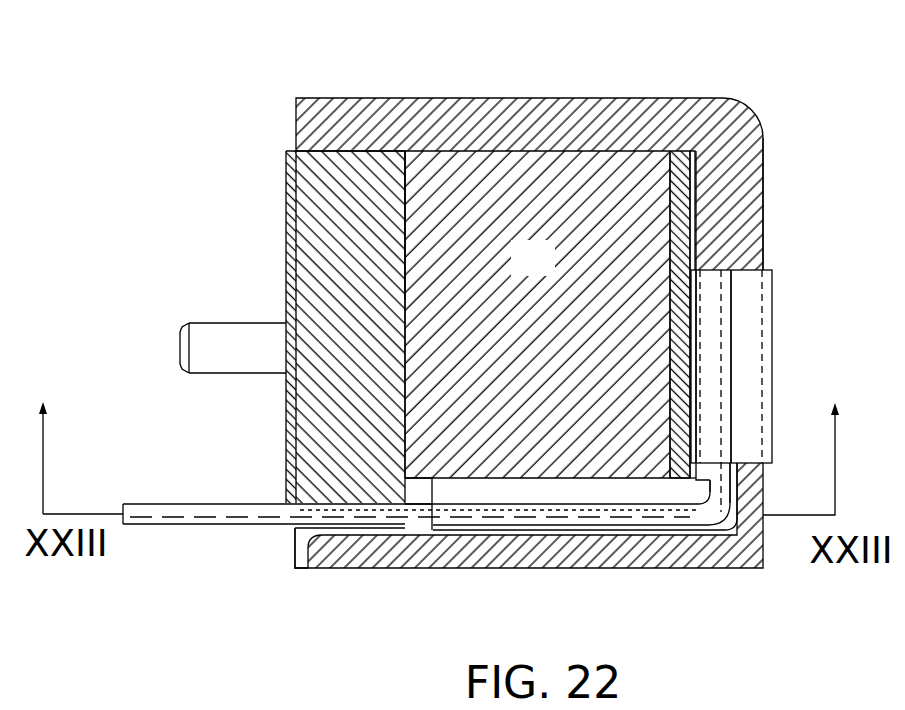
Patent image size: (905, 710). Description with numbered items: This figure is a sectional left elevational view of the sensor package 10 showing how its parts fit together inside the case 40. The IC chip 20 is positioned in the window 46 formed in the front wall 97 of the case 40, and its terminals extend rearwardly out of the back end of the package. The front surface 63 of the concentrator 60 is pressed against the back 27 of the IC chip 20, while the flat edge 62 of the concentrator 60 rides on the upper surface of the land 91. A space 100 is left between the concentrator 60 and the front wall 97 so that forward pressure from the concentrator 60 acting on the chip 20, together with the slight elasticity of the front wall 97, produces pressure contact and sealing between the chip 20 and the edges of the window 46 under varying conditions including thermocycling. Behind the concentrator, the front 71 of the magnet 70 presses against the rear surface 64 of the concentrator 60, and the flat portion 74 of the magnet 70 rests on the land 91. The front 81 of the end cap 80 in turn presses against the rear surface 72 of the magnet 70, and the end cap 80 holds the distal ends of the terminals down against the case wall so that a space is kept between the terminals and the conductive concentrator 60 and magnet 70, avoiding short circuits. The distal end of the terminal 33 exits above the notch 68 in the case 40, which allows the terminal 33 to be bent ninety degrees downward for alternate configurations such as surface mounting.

The sensor package 10 is at (498, 326).
The IC chip 20 is at (750, 301).
The back of the IC chip 27 is at (677, 362).
The terminal 33 is at (138, 515).
The case 40 is at (598, 103).
The window 46 is at (743, 362).
The concentrator 60 is at (710, 150).
The flat edge of the concentrator 62 is at (681, 492).
The front surface of the concentrator 63 is at (705, 190).
The rear surface of the concentrator 64 is at (658, 419).
The notch 68 is at (303, 560).
The magnet 70 is at (517, 272).
The front of the magnet 71 is at (675, 428).
The rear surface of the magnet 72 is at (396, 207).
The flat portion of the magnet 74 is at (487, 493).
The end cap 80 is at (355, 170).
The front of the end cap 81 is at (417, 185).
The land 91 is at (607, 500).
The front wall of the case 97 is at (750, 200).
The space 100 is at (693, 237).